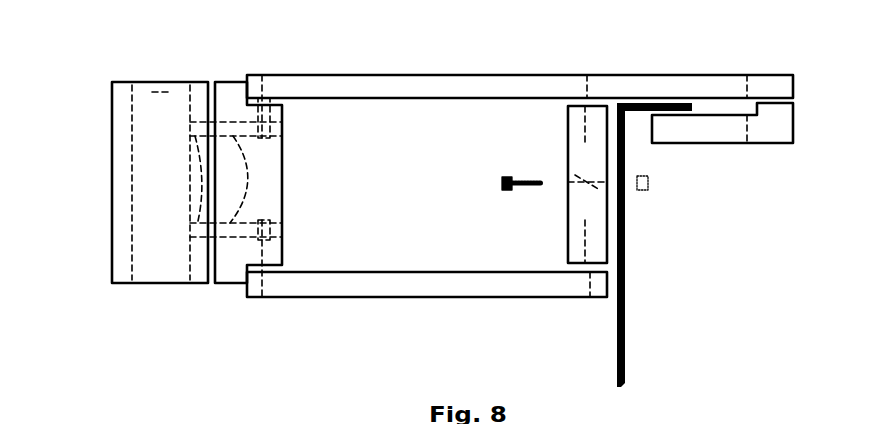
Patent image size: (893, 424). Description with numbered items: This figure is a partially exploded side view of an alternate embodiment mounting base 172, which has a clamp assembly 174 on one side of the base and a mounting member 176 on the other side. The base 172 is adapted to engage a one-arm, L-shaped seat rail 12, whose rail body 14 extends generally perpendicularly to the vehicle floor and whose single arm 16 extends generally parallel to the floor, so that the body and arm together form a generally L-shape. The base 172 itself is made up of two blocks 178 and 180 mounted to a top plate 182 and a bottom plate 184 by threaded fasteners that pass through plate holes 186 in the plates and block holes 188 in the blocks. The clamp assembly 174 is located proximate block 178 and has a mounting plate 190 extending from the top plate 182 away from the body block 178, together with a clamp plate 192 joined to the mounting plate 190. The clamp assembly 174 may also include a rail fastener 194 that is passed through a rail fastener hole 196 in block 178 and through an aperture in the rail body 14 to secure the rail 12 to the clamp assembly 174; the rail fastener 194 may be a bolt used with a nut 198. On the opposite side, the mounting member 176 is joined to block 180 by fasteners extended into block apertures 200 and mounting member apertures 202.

The seat rail 12 is at (661, 194).
The rail body 14 is at (627, 304).
The arm 16 is at (646, 103).
The mounting base 172 is at (491, 183).
The clamp assembly 174 is at (763, 156).
The mounting member 176 is at (119, 185).
The block 178 is at (581, 203).
The block 180 is at (265, 182).
The top plate 182 is at (433, 88).
The bottom plate 184 is at (446, 298).
The plate holes 186 is at (266, 92).
The block holes 188 is at (280, 104).
The mounting plate 190 is at (686, 84).
The clamp plate 192 is at (714, 133).
The rail fastener 194 is at (501, 183).
The rail fastener hole 196 is at (584, 171).
The nut 198 is at (645, 192).
The block apertures 200 is at (248, 179).
The mounting member apertures 202 is at (190, 190).